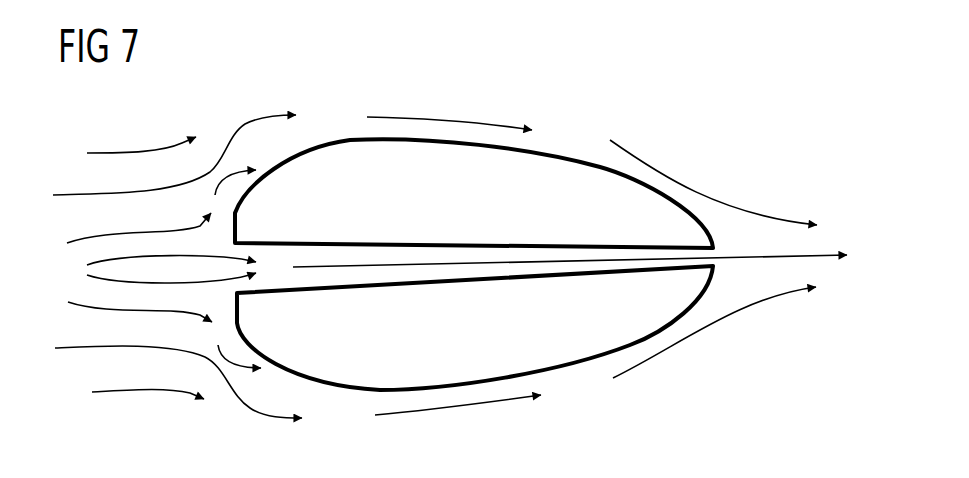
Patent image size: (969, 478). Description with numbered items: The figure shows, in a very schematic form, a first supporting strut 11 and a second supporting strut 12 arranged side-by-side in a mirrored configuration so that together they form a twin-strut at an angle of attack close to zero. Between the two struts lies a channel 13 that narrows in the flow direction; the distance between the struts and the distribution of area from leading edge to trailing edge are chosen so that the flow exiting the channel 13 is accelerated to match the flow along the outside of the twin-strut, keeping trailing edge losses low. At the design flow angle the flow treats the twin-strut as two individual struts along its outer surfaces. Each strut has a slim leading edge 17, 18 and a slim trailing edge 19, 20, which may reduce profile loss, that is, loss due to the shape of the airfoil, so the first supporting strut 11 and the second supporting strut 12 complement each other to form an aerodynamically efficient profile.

The first supporting strut 11 is at (545, 142).
The second supporting strut 12 is at (551, 378).
The channel 13 is at (277, 272).
The leading edge 17 is at (237, 212).
The leading edge 18 is at (240, 323).
The trailing edge 19 is at (707, 220).
The trailing edge 20 is at (707, 292).